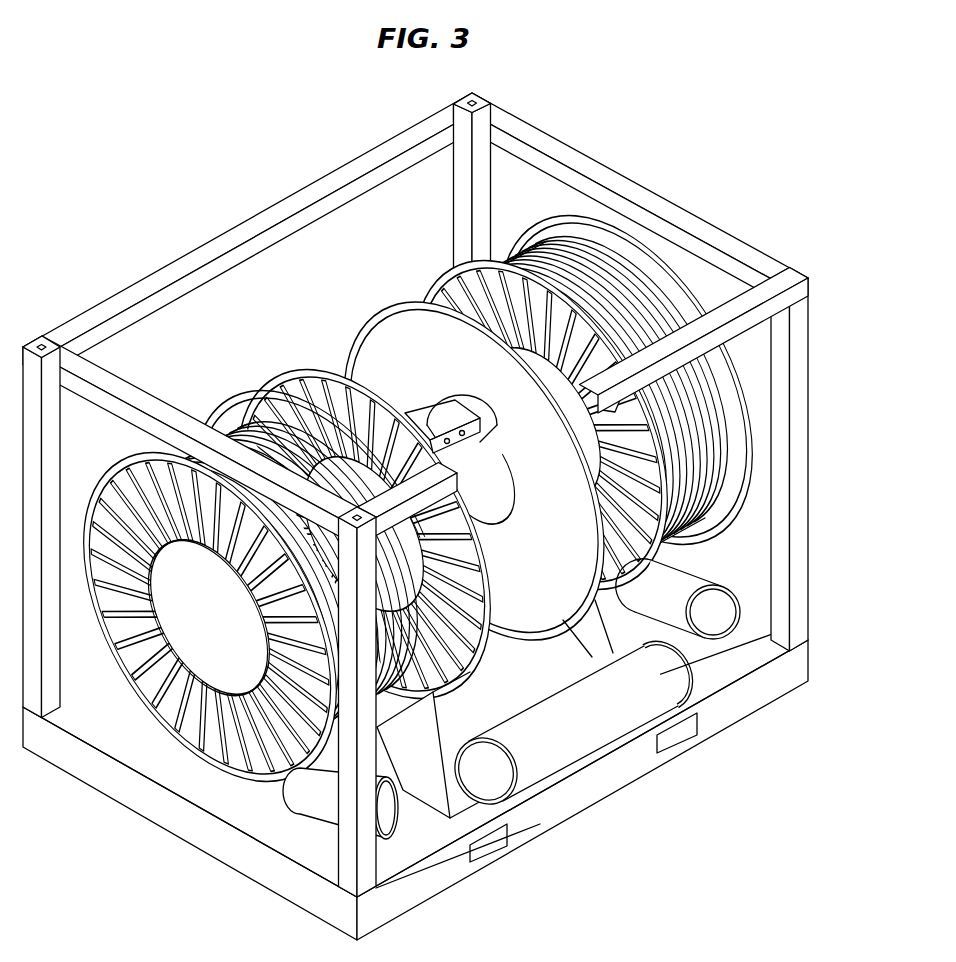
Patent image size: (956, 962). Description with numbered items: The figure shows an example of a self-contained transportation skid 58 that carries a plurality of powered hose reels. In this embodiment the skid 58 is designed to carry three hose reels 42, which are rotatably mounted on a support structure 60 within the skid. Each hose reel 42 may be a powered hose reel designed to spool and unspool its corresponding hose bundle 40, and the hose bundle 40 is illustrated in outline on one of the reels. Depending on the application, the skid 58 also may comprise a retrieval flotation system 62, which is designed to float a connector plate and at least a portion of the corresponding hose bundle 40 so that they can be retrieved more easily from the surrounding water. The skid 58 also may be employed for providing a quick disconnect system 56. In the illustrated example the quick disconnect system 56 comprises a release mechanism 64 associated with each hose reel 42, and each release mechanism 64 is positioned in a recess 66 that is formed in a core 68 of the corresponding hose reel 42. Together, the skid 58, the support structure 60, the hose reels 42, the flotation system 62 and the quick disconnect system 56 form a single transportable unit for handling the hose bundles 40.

The self-contained transportation skid 58 is at (136, 289).
The hose reel 42 is at (451, 531).
The hose bundle 40 is at (716, 460).
The core 68 is at (194, 636).
The recess 66 is at (483, 451).
The quick disconnect system 56 is at (456, 453).
The release mechanism 64 is at (461, 464).
The support structure 60 is at (593, 653).
The retrieval flotation system 62 is at (724, 620).